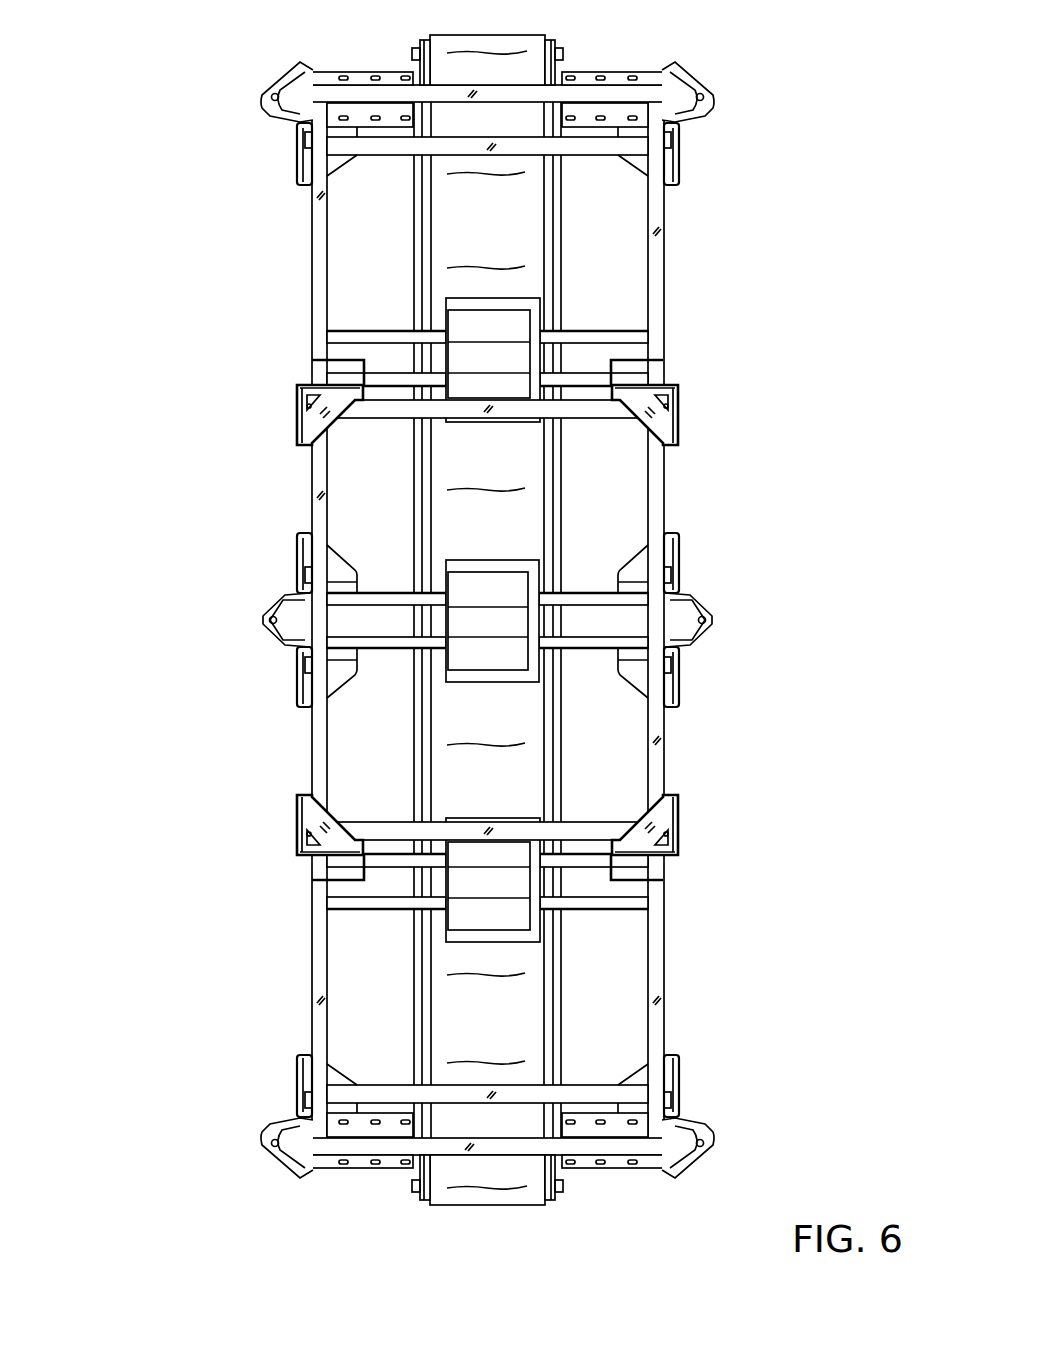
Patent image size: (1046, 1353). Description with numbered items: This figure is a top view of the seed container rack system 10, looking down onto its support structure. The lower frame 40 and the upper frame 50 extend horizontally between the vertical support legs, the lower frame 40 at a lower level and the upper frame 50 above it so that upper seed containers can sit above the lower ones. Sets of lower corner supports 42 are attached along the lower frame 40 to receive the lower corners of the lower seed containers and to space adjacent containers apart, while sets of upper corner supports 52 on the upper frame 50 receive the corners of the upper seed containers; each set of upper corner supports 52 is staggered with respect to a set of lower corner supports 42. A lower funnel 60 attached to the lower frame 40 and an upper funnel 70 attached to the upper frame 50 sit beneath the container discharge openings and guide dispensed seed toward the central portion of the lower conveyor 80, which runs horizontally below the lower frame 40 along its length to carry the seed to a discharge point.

The seed container rack system 10 is at (150, 125).
The lower frame 40 is at (384, 160).
The lower corner supports 42 is at (297, 161).
The upper frame 50 is at (665, 262).
The upper corner supports 52 is at (678, 410).
The lower funnel 60 is at (512, 337).
The upper funnel 70 is at (508, 587).
The lower conveyor 80 is at (503, 33).